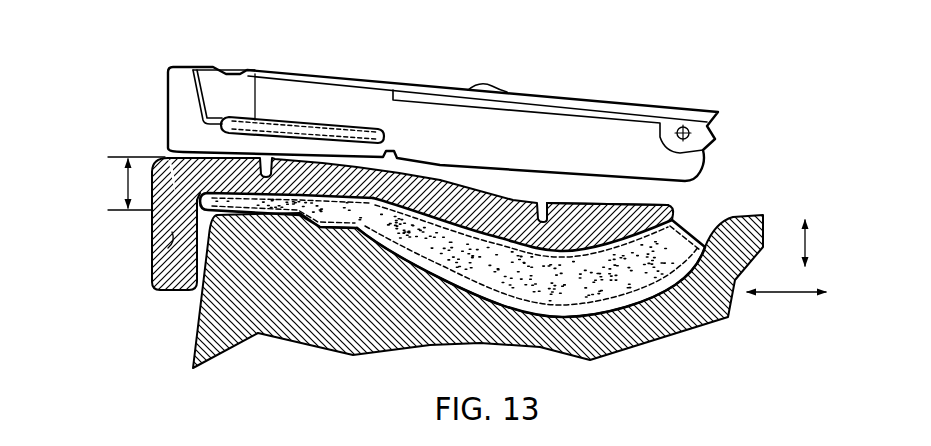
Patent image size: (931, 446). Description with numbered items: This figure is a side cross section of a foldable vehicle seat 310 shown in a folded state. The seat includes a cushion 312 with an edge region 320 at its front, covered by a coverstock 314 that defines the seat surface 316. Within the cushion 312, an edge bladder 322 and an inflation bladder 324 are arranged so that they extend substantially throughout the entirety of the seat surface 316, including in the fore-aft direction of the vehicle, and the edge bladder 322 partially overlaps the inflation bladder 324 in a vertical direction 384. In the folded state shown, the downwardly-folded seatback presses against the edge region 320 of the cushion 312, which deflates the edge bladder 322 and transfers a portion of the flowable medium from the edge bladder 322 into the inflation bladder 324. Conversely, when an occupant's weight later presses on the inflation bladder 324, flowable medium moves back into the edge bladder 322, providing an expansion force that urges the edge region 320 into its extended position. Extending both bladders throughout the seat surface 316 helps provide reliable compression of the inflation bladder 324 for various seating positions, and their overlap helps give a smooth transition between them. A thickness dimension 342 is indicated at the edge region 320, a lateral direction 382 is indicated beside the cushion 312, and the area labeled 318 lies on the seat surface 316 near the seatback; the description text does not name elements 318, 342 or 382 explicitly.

The vehicle seat 310 is at (764, 89).
The cushion 312 is at (714, 207).
The coverstock 314 is at (155, 258).
The seat surface 316 is at (600, 212).
The foam layer recess 318 is at (514, 190).
The edge region 320 is at (211, 168).
The edge bladder 322 is at (265, 210).
The inflation bladder 324 is at (610, 288).
The thickness 342 is at (128, 180).
The lateral direction 382 is at (782, 293).
The vertical direction 384 is at (808, 245).